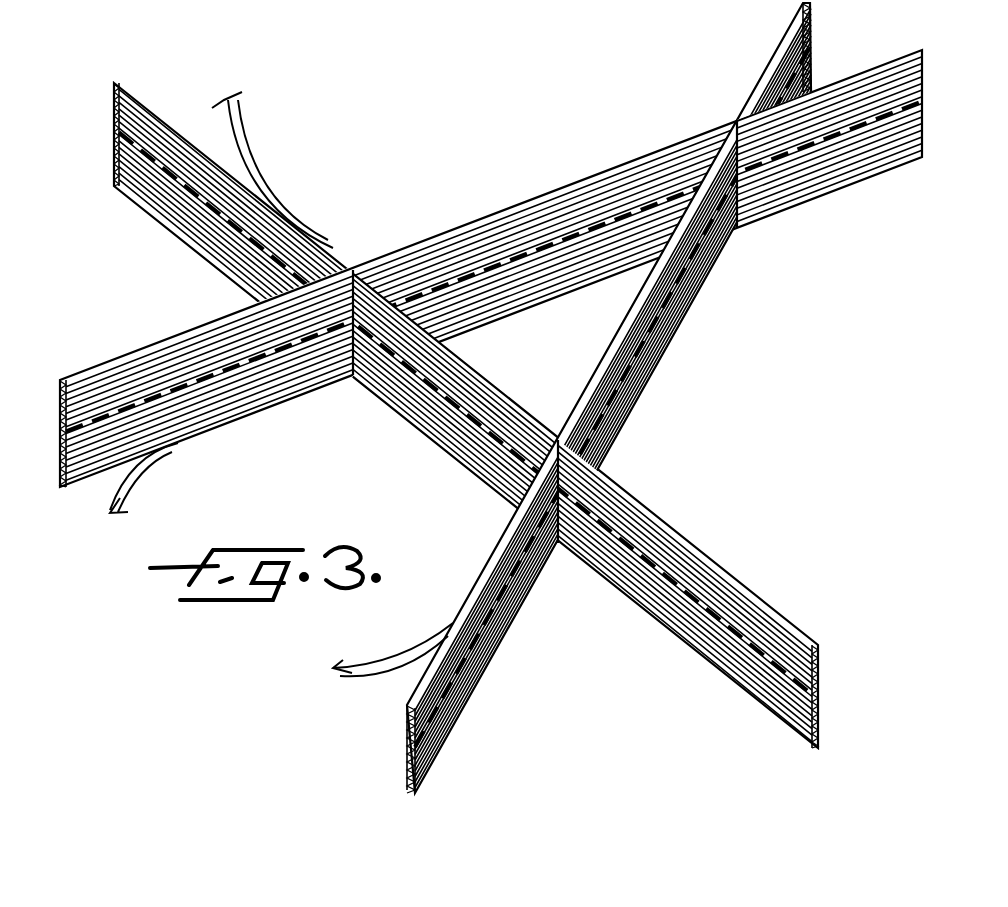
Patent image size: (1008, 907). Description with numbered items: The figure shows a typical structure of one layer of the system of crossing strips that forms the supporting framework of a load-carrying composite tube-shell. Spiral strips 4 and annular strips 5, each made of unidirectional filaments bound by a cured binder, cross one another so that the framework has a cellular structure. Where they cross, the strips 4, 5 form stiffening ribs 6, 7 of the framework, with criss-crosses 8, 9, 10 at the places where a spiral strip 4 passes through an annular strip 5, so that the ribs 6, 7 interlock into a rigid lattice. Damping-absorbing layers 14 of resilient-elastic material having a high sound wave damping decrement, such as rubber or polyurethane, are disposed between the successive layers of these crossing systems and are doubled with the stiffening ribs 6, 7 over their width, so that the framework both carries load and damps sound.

The spiral strip 4 is at (236, 150).
The annular strip 5 is at (350, 657).
The stiffening rib 6 is at (487, 215).
The annular rib 7 is at (620, 336).
The criss-cross 8 is at (355, 288).
The criss-cross 9 is at (738, 202).
The criss-cross 10 is at (560, 522).
The damping-absorbing layer 14 is at (206, 382).